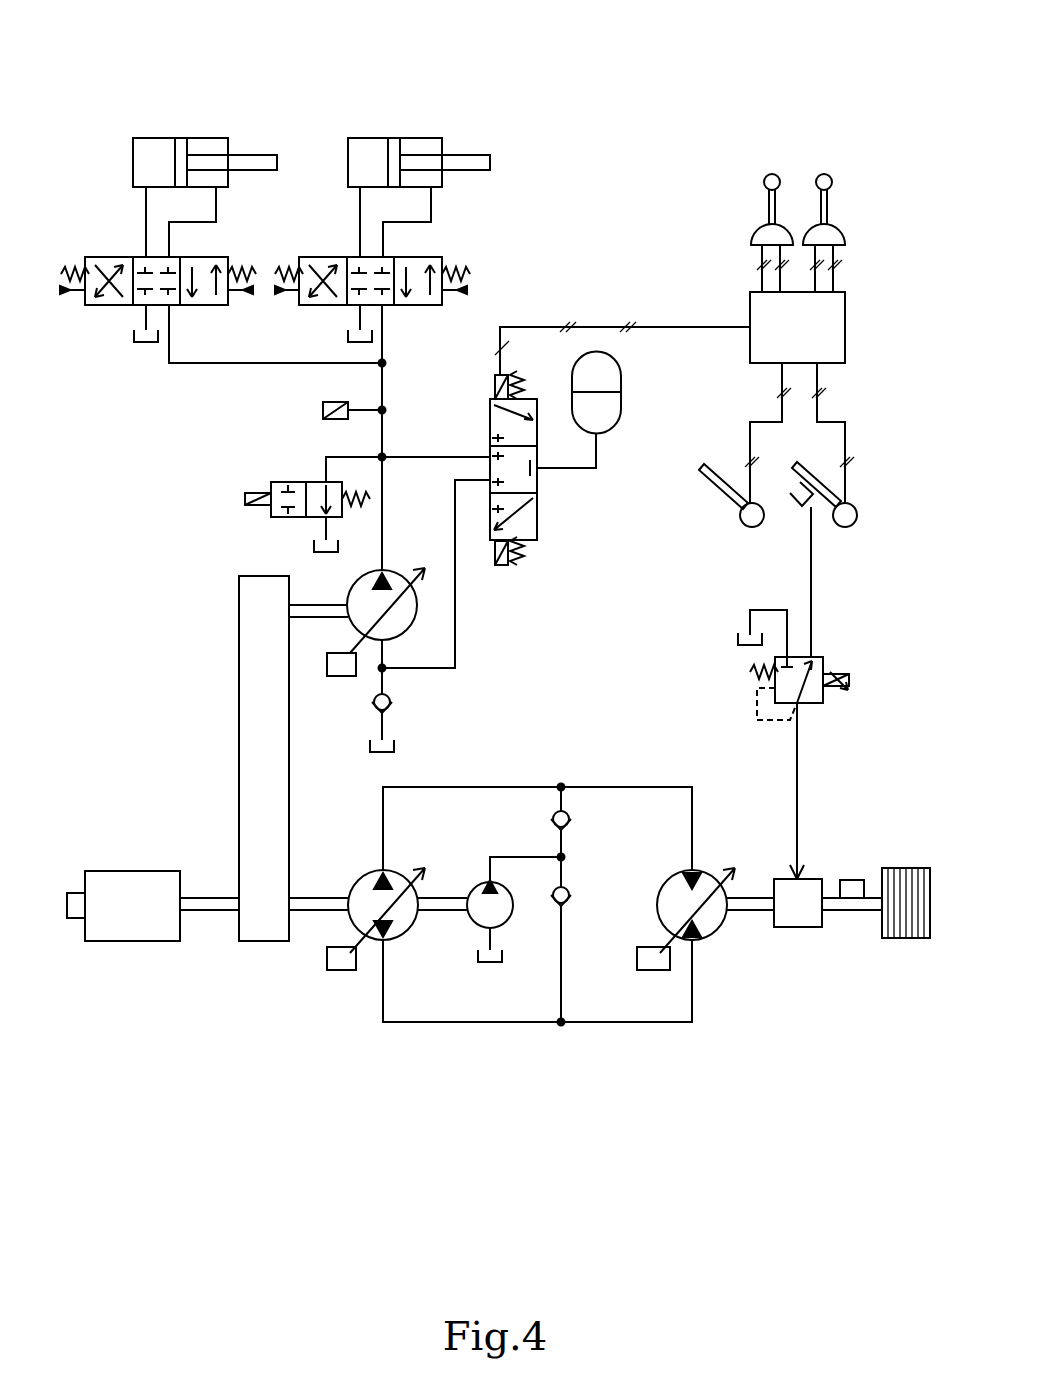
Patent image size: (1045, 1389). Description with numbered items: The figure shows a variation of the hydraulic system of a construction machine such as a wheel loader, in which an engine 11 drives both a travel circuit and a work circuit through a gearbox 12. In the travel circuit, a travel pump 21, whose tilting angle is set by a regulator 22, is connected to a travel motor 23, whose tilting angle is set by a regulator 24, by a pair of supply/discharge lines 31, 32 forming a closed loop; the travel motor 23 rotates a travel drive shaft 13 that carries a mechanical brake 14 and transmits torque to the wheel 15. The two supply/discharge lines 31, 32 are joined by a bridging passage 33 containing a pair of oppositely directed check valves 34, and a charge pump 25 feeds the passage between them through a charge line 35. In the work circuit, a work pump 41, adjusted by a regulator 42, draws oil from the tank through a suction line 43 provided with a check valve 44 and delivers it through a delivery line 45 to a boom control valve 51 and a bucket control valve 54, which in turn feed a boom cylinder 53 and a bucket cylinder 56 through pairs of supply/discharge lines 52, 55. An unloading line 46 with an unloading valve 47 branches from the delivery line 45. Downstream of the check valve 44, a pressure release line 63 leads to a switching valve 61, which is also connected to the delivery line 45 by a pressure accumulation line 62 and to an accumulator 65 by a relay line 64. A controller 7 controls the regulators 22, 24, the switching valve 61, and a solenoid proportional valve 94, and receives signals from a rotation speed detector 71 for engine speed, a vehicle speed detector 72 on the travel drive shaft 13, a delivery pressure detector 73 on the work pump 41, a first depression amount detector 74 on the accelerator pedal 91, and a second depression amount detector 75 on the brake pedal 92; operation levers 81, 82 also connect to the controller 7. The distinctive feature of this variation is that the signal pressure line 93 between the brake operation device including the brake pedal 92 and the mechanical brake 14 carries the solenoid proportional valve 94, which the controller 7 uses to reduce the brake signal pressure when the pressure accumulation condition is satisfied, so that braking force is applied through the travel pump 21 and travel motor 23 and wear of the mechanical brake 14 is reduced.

The controller 7 is at (763, 311).
The engine 11 is at (130, 925).
The gearbox 12 is at (262, 925).
The travel drive shaft 13 is at (752, 915).
The mechanical brake 14 is at (800, 935).
The wheel 15 is at (905, 935).
The travel pump 21 is at (395, 940).
The regulator 22 is at (335, 965).
The travel motor 23 is at (715, 945).
The regulator 24 is at (655, 965).
The charge pump 25 is at (510, 930).
The supply/discharge line 31 is at (625, 787).
The supply/discharge line 32 is at (630, 1025).
The bridging passage 33 is at (563, 945).
The check valves 34 is at (572, 880).
The charge line 35 is at (515, 855).
The work pump 41 is at (415, 618).
The regulator 42 is at (340, 665).
The suction line 43 is at (393, 735).
The check valve 44 is at (390, 697).
The delivery line 45 is at (382, 377).
The unloading line 46 is at (345, 457).
The unloading valve 47 is at (283, 482).
The boom control valve 51 is at (415, 257).
The supply/discharge lines 52 is at (360, 228).
The boom cylinder 53 is at (368, 138).
The bucket control valve 54 is at (107, 257).
The supply/discharge lines 55 is at (146, 228).
The bucket cylinder 56 is at (152, 138).
The switching valve 61 is at (537, 505).
The pressure accumulation line 62 is at (428, 455).
The pressure release line 63 is at (455, 605).
The relay line 64 is at (580, 470).
The accumulator 65 is at (621, 375).
The rotation speed detector 71 is at (73, 912).
The vehicle speed detector 72 is at (851, 885).
The delivery pressure detector 73 is at (323, 410).
The first depression amount detector 74 is at (752, 527).
The second depression amount detector 75 is at (857, 515).
The operation lever 81 is at (752, 222).
The operation lever 82 is at (805, 222).
The accelerator pedal 91 is at (715, 492).
The brake pedal 92 is at (800, 478).
The signal pressure line 93 is at (812, 583).
The solenoid proportional valve 94 is at (815, 705).